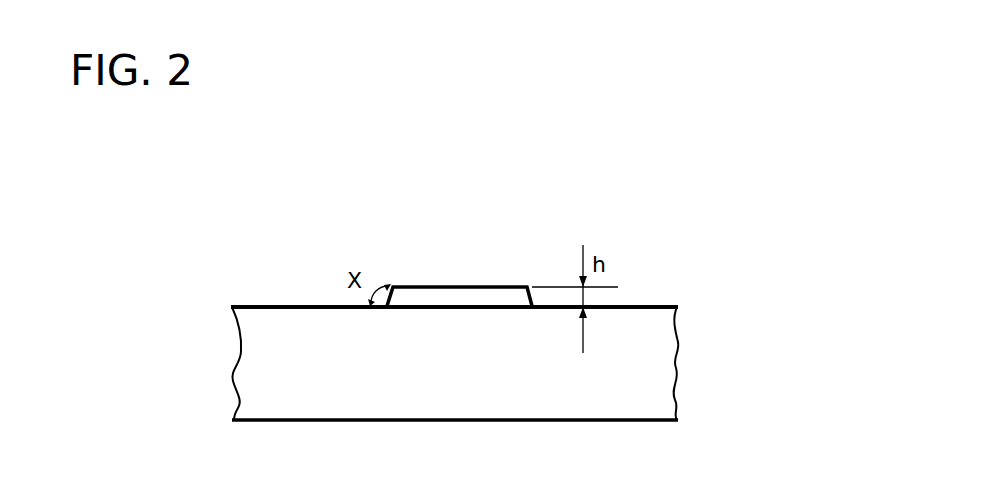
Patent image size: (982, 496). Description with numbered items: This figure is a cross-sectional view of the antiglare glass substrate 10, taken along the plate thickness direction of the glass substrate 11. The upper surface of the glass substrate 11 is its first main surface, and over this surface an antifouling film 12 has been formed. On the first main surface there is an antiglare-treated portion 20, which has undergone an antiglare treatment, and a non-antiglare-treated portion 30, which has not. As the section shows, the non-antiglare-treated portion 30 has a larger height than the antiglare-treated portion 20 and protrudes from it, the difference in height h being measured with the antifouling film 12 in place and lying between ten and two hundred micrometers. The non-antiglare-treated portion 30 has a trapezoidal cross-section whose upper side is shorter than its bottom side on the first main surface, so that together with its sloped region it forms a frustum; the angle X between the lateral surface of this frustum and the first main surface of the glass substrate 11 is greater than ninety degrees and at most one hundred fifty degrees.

The antiglare glass substrate 10 is at (527, 212).
The glass substrate 11 is at (653, 366).
The antifouling film 12 is at (655, 306).
The antiglare-treated portion 20 is at (293, 298).
The non-antiglare-treated portion 30 is at (433, 272).